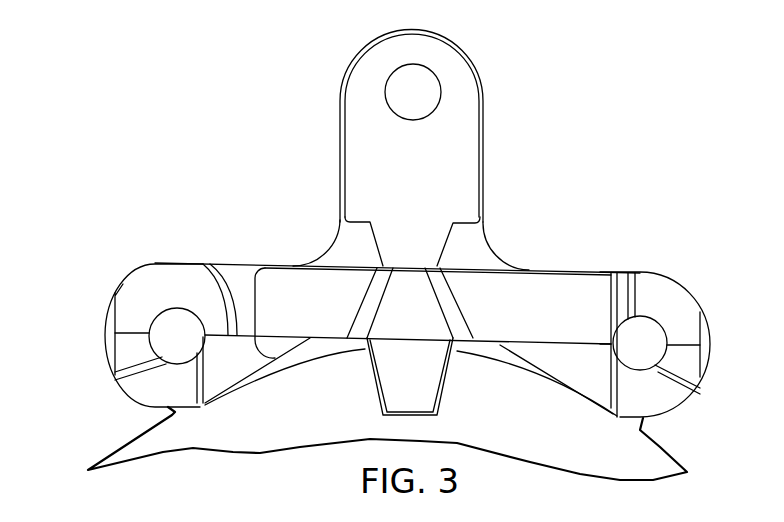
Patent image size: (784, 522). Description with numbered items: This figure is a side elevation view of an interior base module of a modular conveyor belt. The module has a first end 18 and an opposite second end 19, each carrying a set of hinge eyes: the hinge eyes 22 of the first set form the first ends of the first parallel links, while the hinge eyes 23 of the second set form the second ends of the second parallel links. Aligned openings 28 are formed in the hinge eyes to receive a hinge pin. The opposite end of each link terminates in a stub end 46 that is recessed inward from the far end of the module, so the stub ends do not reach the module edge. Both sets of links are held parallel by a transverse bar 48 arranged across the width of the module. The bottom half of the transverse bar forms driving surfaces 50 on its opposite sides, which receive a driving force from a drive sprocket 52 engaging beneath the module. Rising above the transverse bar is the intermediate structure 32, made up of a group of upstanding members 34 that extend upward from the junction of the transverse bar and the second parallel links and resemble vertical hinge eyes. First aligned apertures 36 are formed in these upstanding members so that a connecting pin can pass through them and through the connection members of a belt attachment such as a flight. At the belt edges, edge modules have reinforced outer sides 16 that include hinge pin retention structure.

The reinforced outer sides 16 is at (589, 128).
The upstanding members 34 is at (355, 158).
The intermediate structure 32 is at (473, 212).
The first aligned apertures 36 is at (432, 86).
The hinge eyes 23 is at (145, 275).
The second end 19 is at (102, 328).
The hinge eyes 22 is at (680, 297).
The aligned openings 28 is at (658, 342).
The first end 18 is at (707, 368).
The stub end 46 is at (254, 293).
The driving surfaces 50 is at (375, 377).
The transverse bar 48 is at (425, 397).
The drive sprocket 52 is at (120, 448).